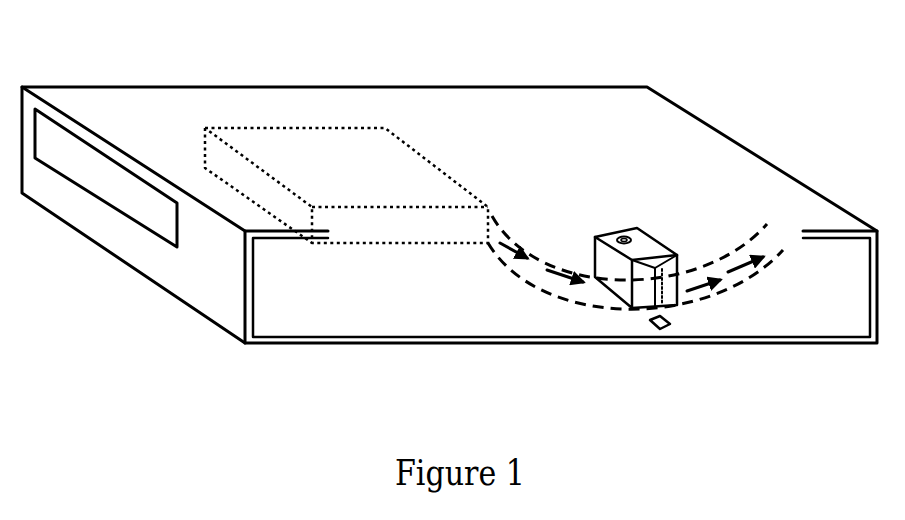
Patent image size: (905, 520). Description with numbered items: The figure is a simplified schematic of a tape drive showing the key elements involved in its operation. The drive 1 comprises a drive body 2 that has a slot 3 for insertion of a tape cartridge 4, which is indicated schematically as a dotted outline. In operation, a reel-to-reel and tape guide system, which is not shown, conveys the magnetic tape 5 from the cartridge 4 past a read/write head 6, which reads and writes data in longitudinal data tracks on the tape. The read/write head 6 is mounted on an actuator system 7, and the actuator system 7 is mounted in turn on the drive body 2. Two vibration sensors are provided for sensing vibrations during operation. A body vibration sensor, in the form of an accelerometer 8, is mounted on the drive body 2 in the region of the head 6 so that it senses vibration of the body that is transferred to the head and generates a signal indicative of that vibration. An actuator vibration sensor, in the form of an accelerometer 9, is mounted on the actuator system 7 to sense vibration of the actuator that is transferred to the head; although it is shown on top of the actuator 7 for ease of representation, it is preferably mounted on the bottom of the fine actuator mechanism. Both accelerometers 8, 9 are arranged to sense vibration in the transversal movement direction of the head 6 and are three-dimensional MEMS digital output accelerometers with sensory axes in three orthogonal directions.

The drive 1 is at (780, 72).
The drive body 2 is at (780, 345).
The slot 3 is at (172, 222).
The tape cartridge 4 is at (425, 168).
The magnetic tape 5 is at (530, 243).
The read/write head 6 is at (662, 300).
The actuator system 7 is at (660, 242).
The body accelerometer 8 is at (652, 330).
The actuator accelerometer 9 is at (627, 237).